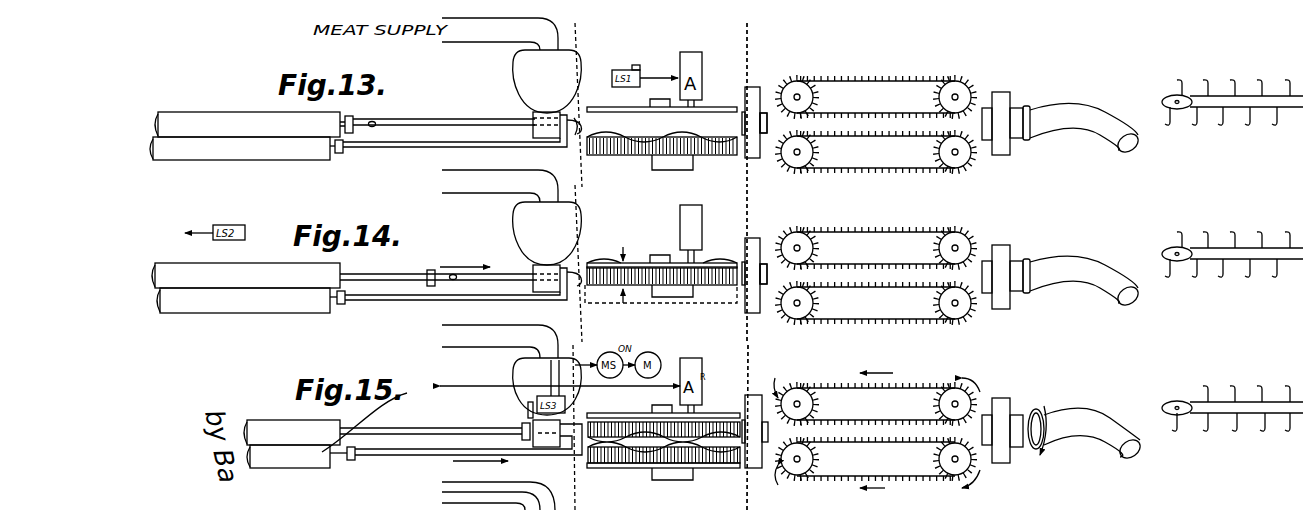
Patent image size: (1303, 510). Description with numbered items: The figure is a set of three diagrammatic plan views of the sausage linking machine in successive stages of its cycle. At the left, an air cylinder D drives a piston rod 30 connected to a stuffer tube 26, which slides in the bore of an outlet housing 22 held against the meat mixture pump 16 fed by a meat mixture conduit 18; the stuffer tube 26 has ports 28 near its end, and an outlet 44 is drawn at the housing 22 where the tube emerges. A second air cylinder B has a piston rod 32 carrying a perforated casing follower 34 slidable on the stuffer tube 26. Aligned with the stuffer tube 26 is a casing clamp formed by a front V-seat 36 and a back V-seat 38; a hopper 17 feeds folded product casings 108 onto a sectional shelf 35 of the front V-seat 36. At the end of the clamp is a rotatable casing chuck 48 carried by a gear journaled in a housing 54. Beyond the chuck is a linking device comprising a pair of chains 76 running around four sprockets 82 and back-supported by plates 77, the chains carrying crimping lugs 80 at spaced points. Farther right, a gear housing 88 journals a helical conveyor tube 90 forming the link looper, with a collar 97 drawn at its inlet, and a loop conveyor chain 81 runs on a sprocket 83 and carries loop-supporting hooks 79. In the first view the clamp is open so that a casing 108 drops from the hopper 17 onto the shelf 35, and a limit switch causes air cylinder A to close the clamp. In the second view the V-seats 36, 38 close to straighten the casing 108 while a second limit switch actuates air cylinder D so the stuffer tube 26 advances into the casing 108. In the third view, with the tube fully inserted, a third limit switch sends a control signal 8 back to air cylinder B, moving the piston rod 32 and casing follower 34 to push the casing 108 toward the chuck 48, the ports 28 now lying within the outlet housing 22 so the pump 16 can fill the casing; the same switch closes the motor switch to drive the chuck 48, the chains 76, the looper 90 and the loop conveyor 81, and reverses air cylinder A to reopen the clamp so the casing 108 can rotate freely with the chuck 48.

In FIG. 15, the control line 8 is at (440, 386).
In FIG. 13, the meat mixture pump 16 is at (513, 81).
In FIG. 14, the meat mixture pump 16 is at (515, 222).
In FIG. 15, the meat mixture pump 16 is at (547, 386).
In FIG. 13, the hopper 17 is at (748, 53).
In FIG. 14, the hopper 17 is at (748, 215).
In FIG. 15, the hopper 17 is at (748, 371).
In FIG. 13, the meat mixture conduit 18 is at (476, 31).
In FIG. 14, the meat mixture conduit 18 is at (463, 186).
In FIG. 15, the meat mixture conduit 18 is at (497, 343).
In FIG. 13, the outlet housing 22 is at (533, 131).
In FIG. 14, the outlet housing 22 is at (533, 285).
In FIG. 15, the outlet housing 22 is at (546, 433).
In FIG. 13, the stuffer tube 26 is at (452, 117).
In FIG. 14, the stuffer tube 26 is at (508, 272).
In FIG. 15, the stuffer tube 26 is at (431, 431).
In FIG. 13, the ports 28 is at (373, 121).
In FIG. 14, the ports 28 is at (453, 283).
In FIG. 13, the piston rod 30 is at (345, 124).
In FIG. 14, the piston rod 30 is at (427, 274).
In FIG. 15, the piston rod 30 is at (483, 430).
In FIG. 13, the piston rod 32 is at (389, 149).
In FIG. 14, the piston rod 32 is at (372, 302).
In FIG. 15, the piston rod 32 is at (410, 455).
In FIG. 13, the casing follower 34 is at (574, 125).
In FIG. 14, the casing follower 34 is at (583, 253).
In FIG. 13, the sectional shelf 35 is at (683, 133).
In FIG. 13, the front V-seat 36 is at (642, 157).
In FIG. 14, the front V-seat 36 is at (703, 296).
In FIG. 15, the front V-seat 36 is at (612, 468).
In FIG. 13, the back V-seat 38 is at (640, 107).
In FIG. 14, the back V-seat 38 is at (704, 264).
In FIG. 15, the back V-seat 38 is at (647, 415).
In FIG. 13, the outlet nozzle 44 is at (580, 129).
In FIG. 13, the casing chuck 48 is at (767, 113).
In FIG. 14, the casing chuck 48 is at (767, 277).
In FIG. 13, the housing 54 is at (754, 134).
In FIG. 14, the housing 54 is at (750, 312).
In FIG. 15, the housing 54 is at (755, 398).
In FIG. 13, the chains 76 is at (860, 168).
In FIG. 14, the chains 76 is at (890, 267).
In FIG. 15, the chains 76 is at (923, 390).
In FIG. 13, the plates 77 is at (905, 76).
In FIG. 14, the plates 77 is at (905, 229).
In FIG. 15, the plates 77 is at (843, 386).
In FIG. 13, the loop-supporting hooks 79 is at (1160, 100).
In FIG. 14, the loop-supporting hooks 79 is at (1165, 252).
In FIG. 15, the loop-supporting hooks 79 is at (1172, 398).
In FIG. 13, the crimping lugs 80 is at (888, 75).
In FIG. 14, the crimping lugs 80 is at (888, 228).
In FIG. 15, the crimping lugs 80 is at (897, 387).
In FIG. 13, the loop conveyor chain 81 is at (1275, 96).
In FIG. 14, the loop conveyor chain 81 is at (1276, 248).
In FIG. 15, the loop conveyor chain 81 is at (1268, 401).
In FIG. 13, the sprockets 82 is at (960, 83).
In FIG. 14, the sprockets 82 is at (942, 250).
In FIG. 15, the sprockets 82 is at (803, 452).
In FIG. 13, the sprocket 83 is at (1185, 100).
In FIG. 14, the sprocket 83 is at (1185, 252).
In FIG. 15, the sprocket 83 is at (1177, 415).
In FIG. 13, the gear housing 88 is at (1010, 94).
In FIG. 14, the gear housing 88 is at (1010, 250).
In FIG. 15, the gear housing 88 is at (1010, 401).
In FIG. 13, the helical conveyor tube 90 is at (1085, 126).
In FIG. 14, the helical conveyor tube 90 is at (1100, 283).
In FIG. 15, the helical conveyor tube 90 is at (1113, 437).
In FIG. 15, the rotating collar 97 is at (1050, 440).
In FIG. 13, the product casing 108 is at (728, 157).
In FIG. 14, the product casing 108 is at (635, 268).
In FIG. 15, the product casing 108 is at (700, 425).
In FIG. 13, the air cylinder D is at (234, 118).
In FIG. 14, the air cylinder D is at (174, 268).
In FIG. 15, the air cylinder D is at (283, 424).
In FIG. 13, the air cylinder B is at (223, 152).
In FIG. 14, the air cylinder B is at (220, 305).
In FIG. 15, the air cylinder B is at (288, 456).